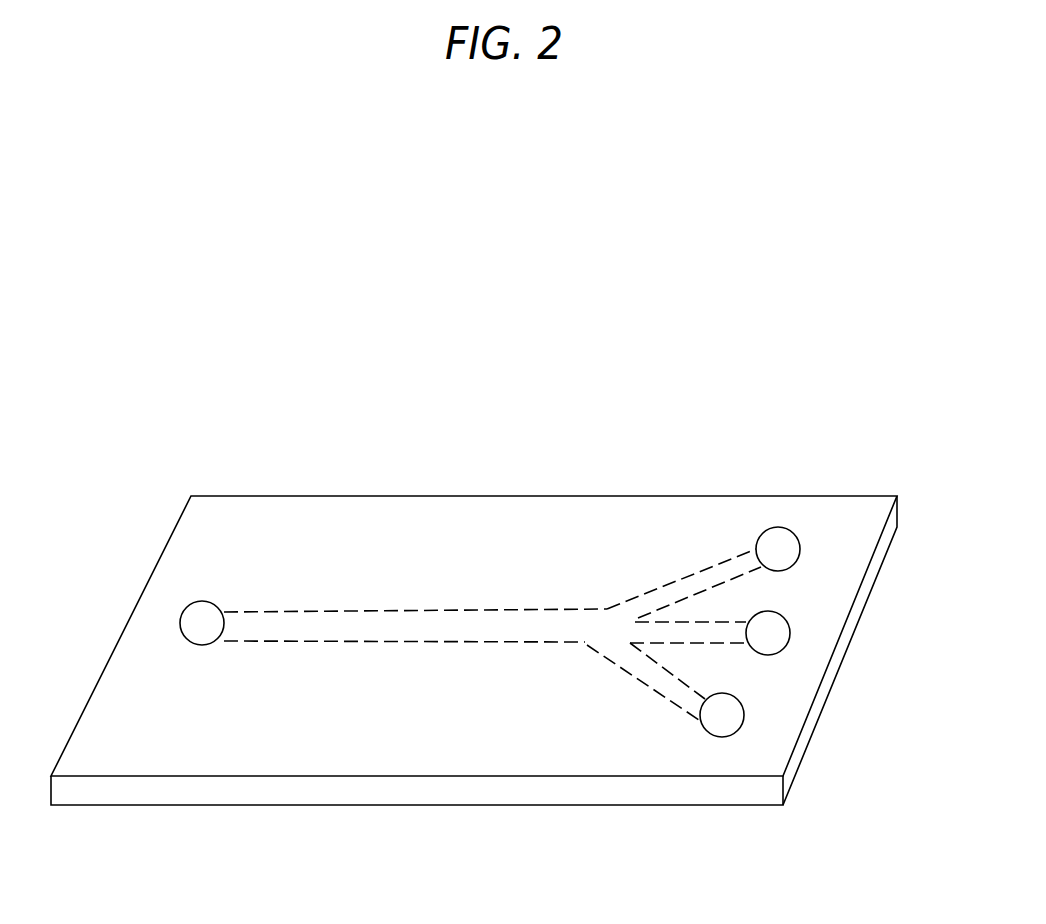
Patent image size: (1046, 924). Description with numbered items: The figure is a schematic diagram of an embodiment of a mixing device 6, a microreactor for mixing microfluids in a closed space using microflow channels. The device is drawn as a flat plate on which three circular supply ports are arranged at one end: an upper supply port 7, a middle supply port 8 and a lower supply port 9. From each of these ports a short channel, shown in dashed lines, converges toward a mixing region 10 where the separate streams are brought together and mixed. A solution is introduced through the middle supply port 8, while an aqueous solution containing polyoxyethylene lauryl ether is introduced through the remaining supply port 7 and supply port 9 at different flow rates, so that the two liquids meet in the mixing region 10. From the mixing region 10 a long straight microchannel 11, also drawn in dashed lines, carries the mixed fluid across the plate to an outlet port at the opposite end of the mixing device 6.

The mixing device 6 is at (397, 517).
The supply port 7 is at (777, 546).
The supply port 8 is at (772, 632).
The supply port 9 is at (713, 718).
The mixing region 10 is at (587, 628).
The microchannel 11 is at (410, 624).